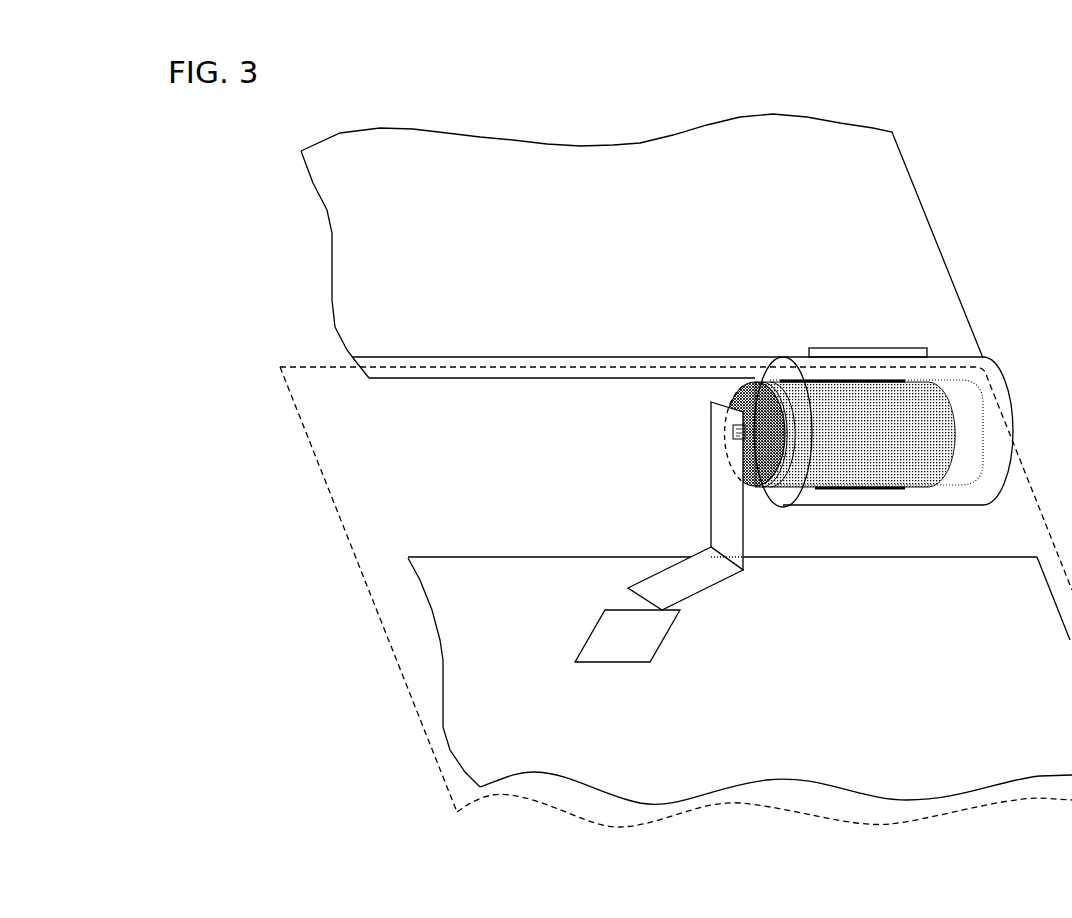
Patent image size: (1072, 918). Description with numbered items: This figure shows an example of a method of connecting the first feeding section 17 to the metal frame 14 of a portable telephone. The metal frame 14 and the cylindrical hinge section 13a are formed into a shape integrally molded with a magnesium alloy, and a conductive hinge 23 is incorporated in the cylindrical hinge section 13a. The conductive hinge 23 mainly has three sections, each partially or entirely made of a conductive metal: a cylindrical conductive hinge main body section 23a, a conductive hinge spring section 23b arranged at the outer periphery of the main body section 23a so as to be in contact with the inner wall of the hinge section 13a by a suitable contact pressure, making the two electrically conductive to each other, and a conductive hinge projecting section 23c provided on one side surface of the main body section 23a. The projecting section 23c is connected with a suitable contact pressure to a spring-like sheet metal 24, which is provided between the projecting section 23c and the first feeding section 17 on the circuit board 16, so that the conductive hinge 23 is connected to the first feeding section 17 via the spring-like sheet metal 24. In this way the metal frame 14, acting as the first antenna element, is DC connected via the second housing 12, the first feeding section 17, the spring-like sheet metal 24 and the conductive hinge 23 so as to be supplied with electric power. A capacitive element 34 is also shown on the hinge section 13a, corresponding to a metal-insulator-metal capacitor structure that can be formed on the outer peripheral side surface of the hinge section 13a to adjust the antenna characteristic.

The second housing 12 is at (409, 686).
The hinge section 13a is at (933, 367).
The metal frame 14 is at (878, 242).
The circuit board 16 is at (459, 578).
The first feeding section 17 is at (642, 662).
The conductive hinge 23 is at (885, 547).
The cylindrical conductive hinge main body section 23a is at (833, 460).
The conductive hinge spring section 23b is at (880, 380).
The conductive hinge projecting section 23c is at (778, 470).
The spring-like sheet metal 24 is at (723, 485).
The capacitive element 34 is at (848, 350).